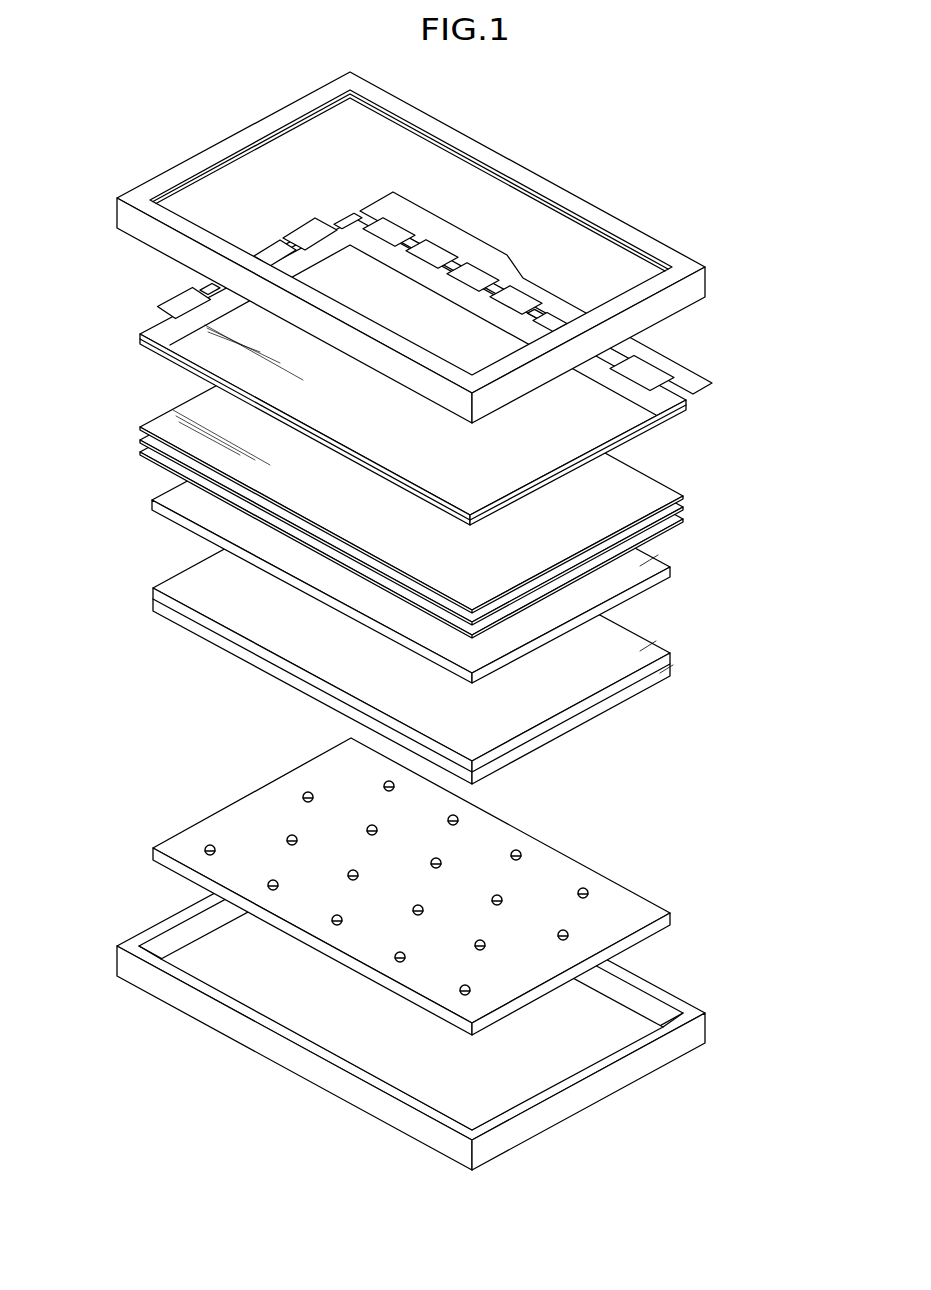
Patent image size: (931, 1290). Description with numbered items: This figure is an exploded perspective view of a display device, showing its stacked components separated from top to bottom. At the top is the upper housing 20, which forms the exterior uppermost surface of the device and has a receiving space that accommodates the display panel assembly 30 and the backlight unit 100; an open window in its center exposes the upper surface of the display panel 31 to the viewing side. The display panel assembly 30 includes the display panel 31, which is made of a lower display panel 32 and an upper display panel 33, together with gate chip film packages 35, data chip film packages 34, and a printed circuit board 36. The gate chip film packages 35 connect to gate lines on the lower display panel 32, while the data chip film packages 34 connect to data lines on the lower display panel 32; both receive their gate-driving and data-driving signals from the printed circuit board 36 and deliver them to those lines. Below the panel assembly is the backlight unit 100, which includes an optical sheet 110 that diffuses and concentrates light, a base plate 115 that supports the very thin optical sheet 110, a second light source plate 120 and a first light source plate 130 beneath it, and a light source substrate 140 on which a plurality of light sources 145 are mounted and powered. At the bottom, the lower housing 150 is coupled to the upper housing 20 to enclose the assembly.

The upper housing 20 is at (703, 283).
The display panel assembly 30 is at (414, 358).
The display panel 31 is at (468, 372).
The lower display panel 32 is at (656, 404).
The upper display panel 33 is at (650, 415).
The data chip film package 34 is at (647, 375).
The gate chip film package 35 is at (177, 305).
The printed circuit board 36 is at (667, 353).
The backlight unit 100 is at (483, 741).
The optical sheet 110 is at (444, 475).
The base plate 115 is at (660, 557).
The second light source plate 120 is at (657, 640).
The first light source plate 130 is at (463, 632).
The light source substrate 140 is at (463, 886).
The light source 145 is at (588, 892).
The lower housing 150 is at (697, 1027).